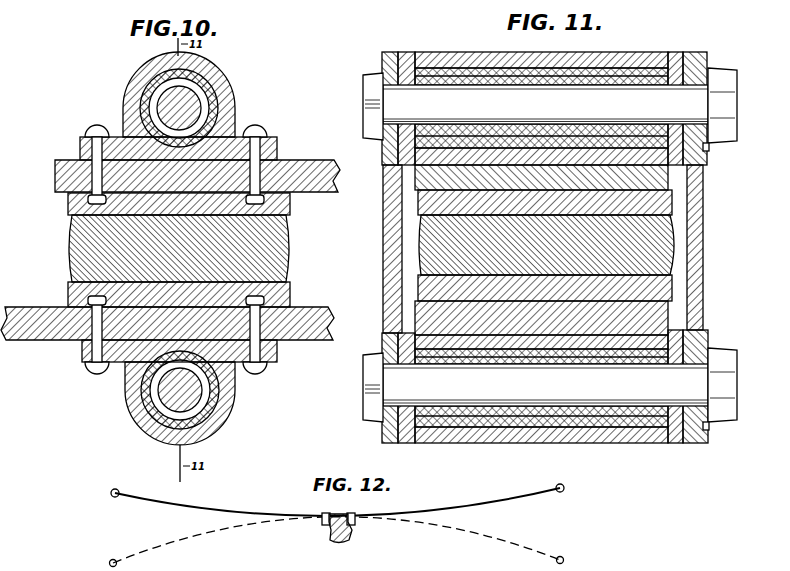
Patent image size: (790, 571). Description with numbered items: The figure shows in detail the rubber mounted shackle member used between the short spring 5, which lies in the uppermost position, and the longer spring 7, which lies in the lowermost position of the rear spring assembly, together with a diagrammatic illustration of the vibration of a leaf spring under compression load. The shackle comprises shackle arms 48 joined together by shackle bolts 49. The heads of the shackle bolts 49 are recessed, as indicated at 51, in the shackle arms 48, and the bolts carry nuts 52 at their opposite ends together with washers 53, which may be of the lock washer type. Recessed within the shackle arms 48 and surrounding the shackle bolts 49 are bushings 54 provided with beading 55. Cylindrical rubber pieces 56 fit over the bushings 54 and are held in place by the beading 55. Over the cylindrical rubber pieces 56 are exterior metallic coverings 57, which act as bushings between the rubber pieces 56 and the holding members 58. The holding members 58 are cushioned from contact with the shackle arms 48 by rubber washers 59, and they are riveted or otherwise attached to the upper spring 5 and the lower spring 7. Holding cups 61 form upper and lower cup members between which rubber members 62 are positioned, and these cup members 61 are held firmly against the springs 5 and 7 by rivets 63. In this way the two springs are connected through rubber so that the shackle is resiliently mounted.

In FIG. 10, the short spring 5 is at (303, 167).
In FIG. 11, the short spring 5 is at (423, 173).
In FIG. 10, the spring 7 is at (303, 313).
In FIG. 11, the spring 7 is at (418, 315).
In FIG. 11, the shackle arms 48 is at (383, 215).
In FIG. 10, the shackle bolts 49 is at (195, 101).
In FIG. 11, the shackle bolts 49 is at (473, 97).
In FIG. 11, the recess 51 is at (378, 150).
In FIG. 11, the nuts 52 is at (723, 68).
In FIG. 11, the washers 53 is at (707, 150).
In FIG. 10, the bushings 54 is at (203, 76).
In FIG. 11, the bushings 54 is at (603, 80).
In FIG. 11, the beading 55 is at (543, 78).
In FIG. 10, the cylindrical rubber pieces 56 is at (157, 80).
In FIG. 11, the cylindrical rubber pieces 56 is at (513, 72).
In FIG. 10, the exterior metallic coverings 57 is at (137, 98).
In FIG. 11, the exterior metallic coverings 57 is at (447, 67).
In FIG. 10, the holding members 58 is at (134, 90).
In FIG. 11, the holding members 58 is at (643, 53).
In FIG. 11, the rubber washers 59 is at (405, 50).
In FIG. 10, the holding cups 61 is at (68, 210).
In FIG. 11, the holding cups 61 is at (670, 207).
In FIG. 10, the rubber members 62 is at (68, 247).
In FIG. 11, the rubber members 62 is at (417, 243).
In FIG. 10, the rivets 63 is at (255, 128).